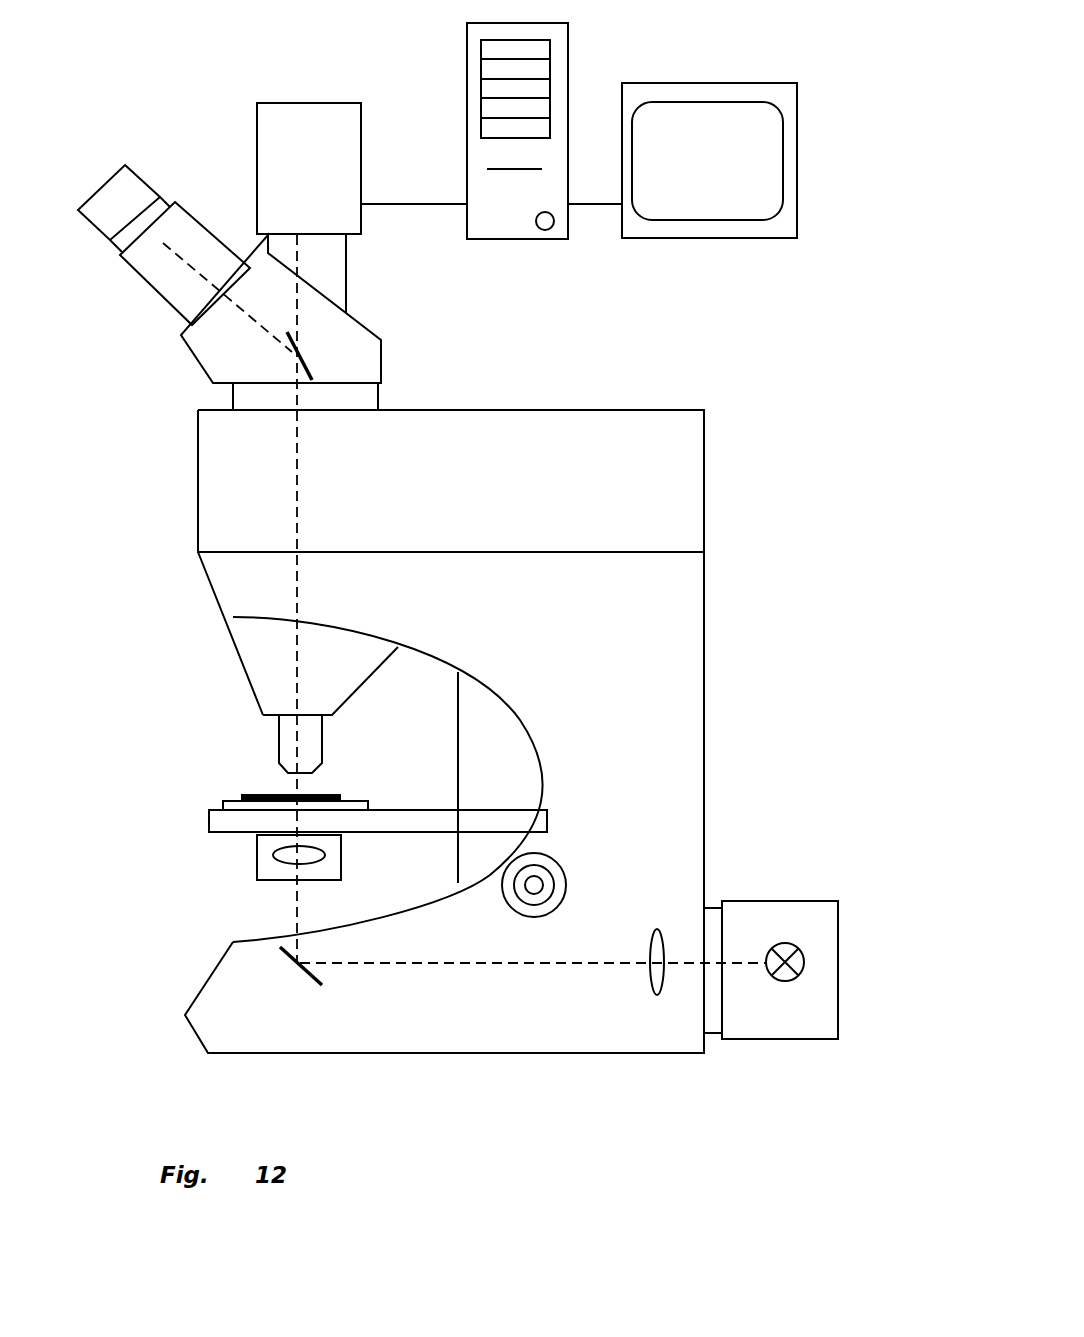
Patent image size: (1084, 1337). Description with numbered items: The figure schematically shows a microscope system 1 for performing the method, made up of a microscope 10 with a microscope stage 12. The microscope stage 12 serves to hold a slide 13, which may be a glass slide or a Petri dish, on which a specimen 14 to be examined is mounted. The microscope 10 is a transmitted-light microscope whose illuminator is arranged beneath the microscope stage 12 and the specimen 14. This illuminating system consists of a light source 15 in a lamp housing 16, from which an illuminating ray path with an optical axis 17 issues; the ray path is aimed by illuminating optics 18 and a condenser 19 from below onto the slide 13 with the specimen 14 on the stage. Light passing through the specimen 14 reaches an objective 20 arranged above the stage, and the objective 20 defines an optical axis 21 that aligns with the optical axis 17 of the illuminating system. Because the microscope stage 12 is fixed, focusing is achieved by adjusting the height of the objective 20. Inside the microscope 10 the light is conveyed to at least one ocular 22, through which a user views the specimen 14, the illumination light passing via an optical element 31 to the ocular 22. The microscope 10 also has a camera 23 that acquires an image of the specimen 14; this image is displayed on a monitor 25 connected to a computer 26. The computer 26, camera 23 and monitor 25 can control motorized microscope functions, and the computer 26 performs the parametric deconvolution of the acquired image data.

The microscope system 1 is at (756, 685).
The microscope 10 is at (172, 473).
The microscope stage 12 is at (228, 820).
The slide 13 is at (227, 805).
The specimen 14 is at (273, 793).
The light source 15 is at (800, 960).
The lamp housing 16 is at (780, 1007).
The optical axis 17 is at (385, 963).
The illuminating optics 18 is at (655, 985).
The condenser 19 is at (273, 850).
The objective 20 is at (288, 738).
The optical axis 21 is at (297, 670).
The ocular 22 is at (127, 188).
The camera 23 is at (307, 148).
The monitor 25 is at (728, 227).
The computer 26 is at (557, 220).
The optical element 31 is at (307, 370).